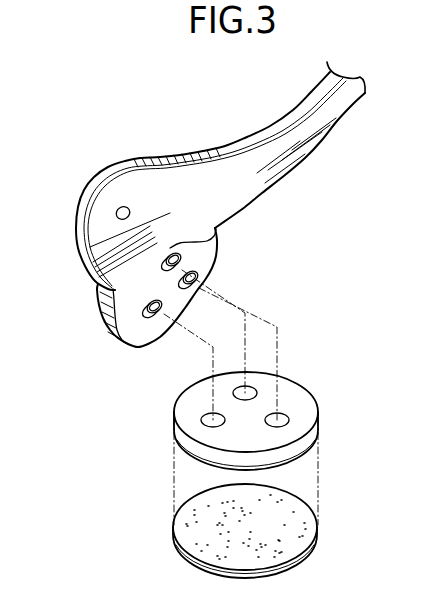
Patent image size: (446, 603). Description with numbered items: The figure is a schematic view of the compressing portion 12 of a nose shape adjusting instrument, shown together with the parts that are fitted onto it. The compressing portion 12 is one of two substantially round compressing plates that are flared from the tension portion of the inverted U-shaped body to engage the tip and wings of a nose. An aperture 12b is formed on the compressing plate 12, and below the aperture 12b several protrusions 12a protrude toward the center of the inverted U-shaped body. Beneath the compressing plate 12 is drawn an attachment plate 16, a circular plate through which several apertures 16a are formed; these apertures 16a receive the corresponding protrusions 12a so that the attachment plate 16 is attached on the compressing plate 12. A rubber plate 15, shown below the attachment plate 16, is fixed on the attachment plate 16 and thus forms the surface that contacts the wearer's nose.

The compressing portion 12 is at (130, 274).
The protrusions 12a is at (218, 230).
The aperture 12b is at (117, 215).
The rubber plate 15 is at (307, 527).
The attachment plate 16 is at (307, 403).
The apertures 16a is at (207, 413).